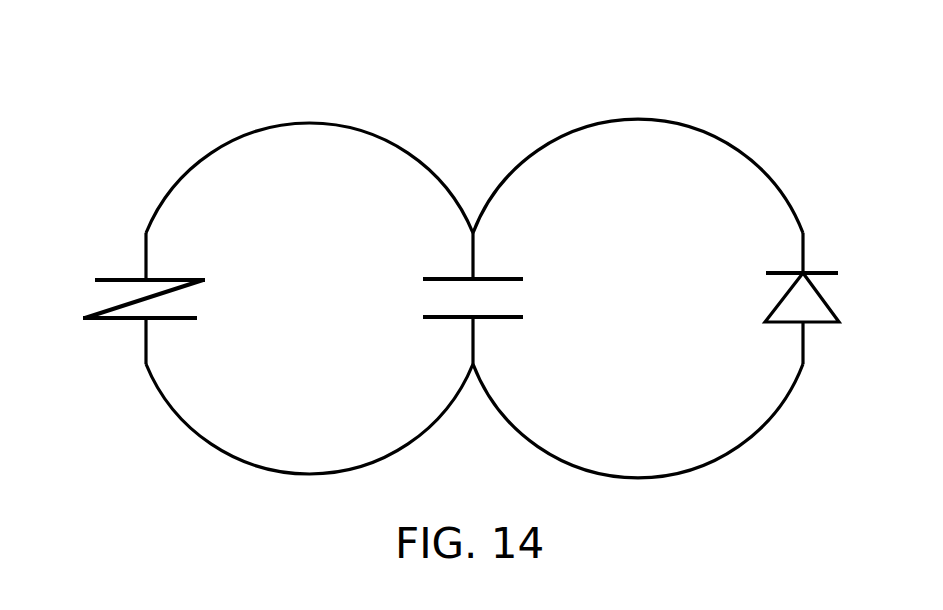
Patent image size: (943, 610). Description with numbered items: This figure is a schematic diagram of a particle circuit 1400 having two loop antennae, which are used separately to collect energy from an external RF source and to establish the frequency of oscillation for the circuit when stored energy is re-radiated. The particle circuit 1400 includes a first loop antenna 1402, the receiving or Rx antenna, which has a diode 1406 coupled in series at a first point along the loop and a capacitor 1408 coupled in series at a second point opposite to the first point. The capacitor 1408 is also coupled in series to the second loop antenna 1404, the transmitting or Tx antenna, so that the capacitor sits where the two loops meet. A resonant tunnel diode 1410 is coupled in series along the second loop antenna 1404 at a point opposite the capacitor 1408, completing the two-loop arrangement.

The particle circuit 1400 is at (795, 98).
The first loop antenna 1402 is at (638, 122).
The second loop antenna 1404 is at (313, 122).
The diode 1406 is at (817, 322).
The capacitor 1408 is at (508, 318).
The resonant tunnel diode 1410 is at (127, 279).